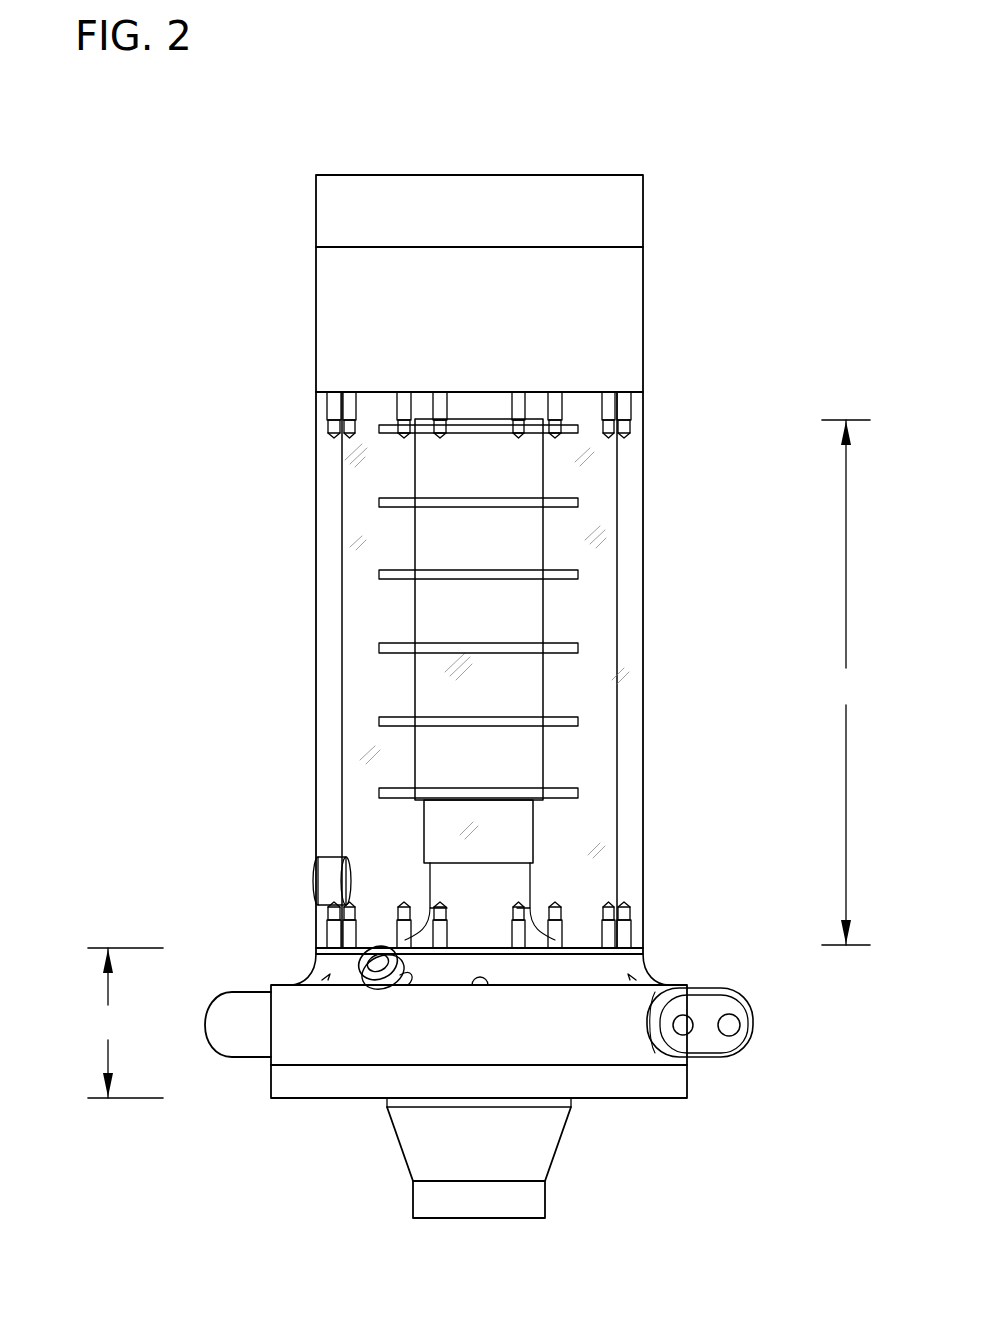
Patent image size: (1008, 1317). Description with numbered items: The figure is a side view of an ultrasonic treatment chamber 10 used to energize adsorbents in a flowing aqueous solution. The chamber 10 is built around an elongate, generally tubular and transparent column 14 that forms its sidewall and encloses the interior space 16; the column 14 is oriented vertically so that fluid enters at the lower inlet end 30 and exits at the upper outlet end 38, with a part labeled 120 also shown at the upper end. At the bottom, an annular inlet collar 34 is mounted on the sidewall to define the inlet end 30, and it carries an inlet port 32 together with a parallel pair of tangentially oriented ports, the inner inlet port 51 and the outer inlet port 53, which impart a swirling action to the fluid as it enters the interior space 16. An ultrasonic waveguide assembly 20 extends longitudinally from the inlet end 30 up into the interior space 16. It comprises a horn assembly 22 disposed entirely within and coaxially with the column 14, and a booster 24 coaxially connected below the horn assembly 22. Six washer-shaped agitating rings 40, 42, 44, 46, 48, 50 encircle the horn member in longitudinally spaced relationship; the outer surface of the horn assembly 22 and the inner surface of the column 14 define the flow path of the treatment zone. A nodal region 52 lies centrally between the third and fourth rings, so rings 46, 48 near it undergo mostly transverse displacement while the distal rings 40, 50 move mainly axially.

The ultrasonic treatment chamber 10 is at (108, 667).
The column 14 is at (316, 663).
The interior space 16 is at (390, 530).
The ultrasonic waveguide assembly 20 is at (846, 682).
The horn assembly 22 is at (438, 768).
The booster 24 is at (545, 1158).
The inlet end 30 is at (125, 1023).
The inlet port 32 is at (377, 960).
The inlet collar 34 is at (666, 957).
The outlet end 38 is at (584, 155).
The first ring 40 is at (580, 432).
The second ring 42 is at (580, 503).
The third ring 44 is at (580, 576).
The fourth ring 46 is at (580, 648).
The fifth ring 48 is at (580, 720).
The sixth ring 50 is at (580, 793).
The inner inlet port 51 is at (686, 1020).
The nodal region 52 is at (448, 618).
The outer inlet port 53 is at (731, 1024).
The housing lower section 120 is at (343, 322).